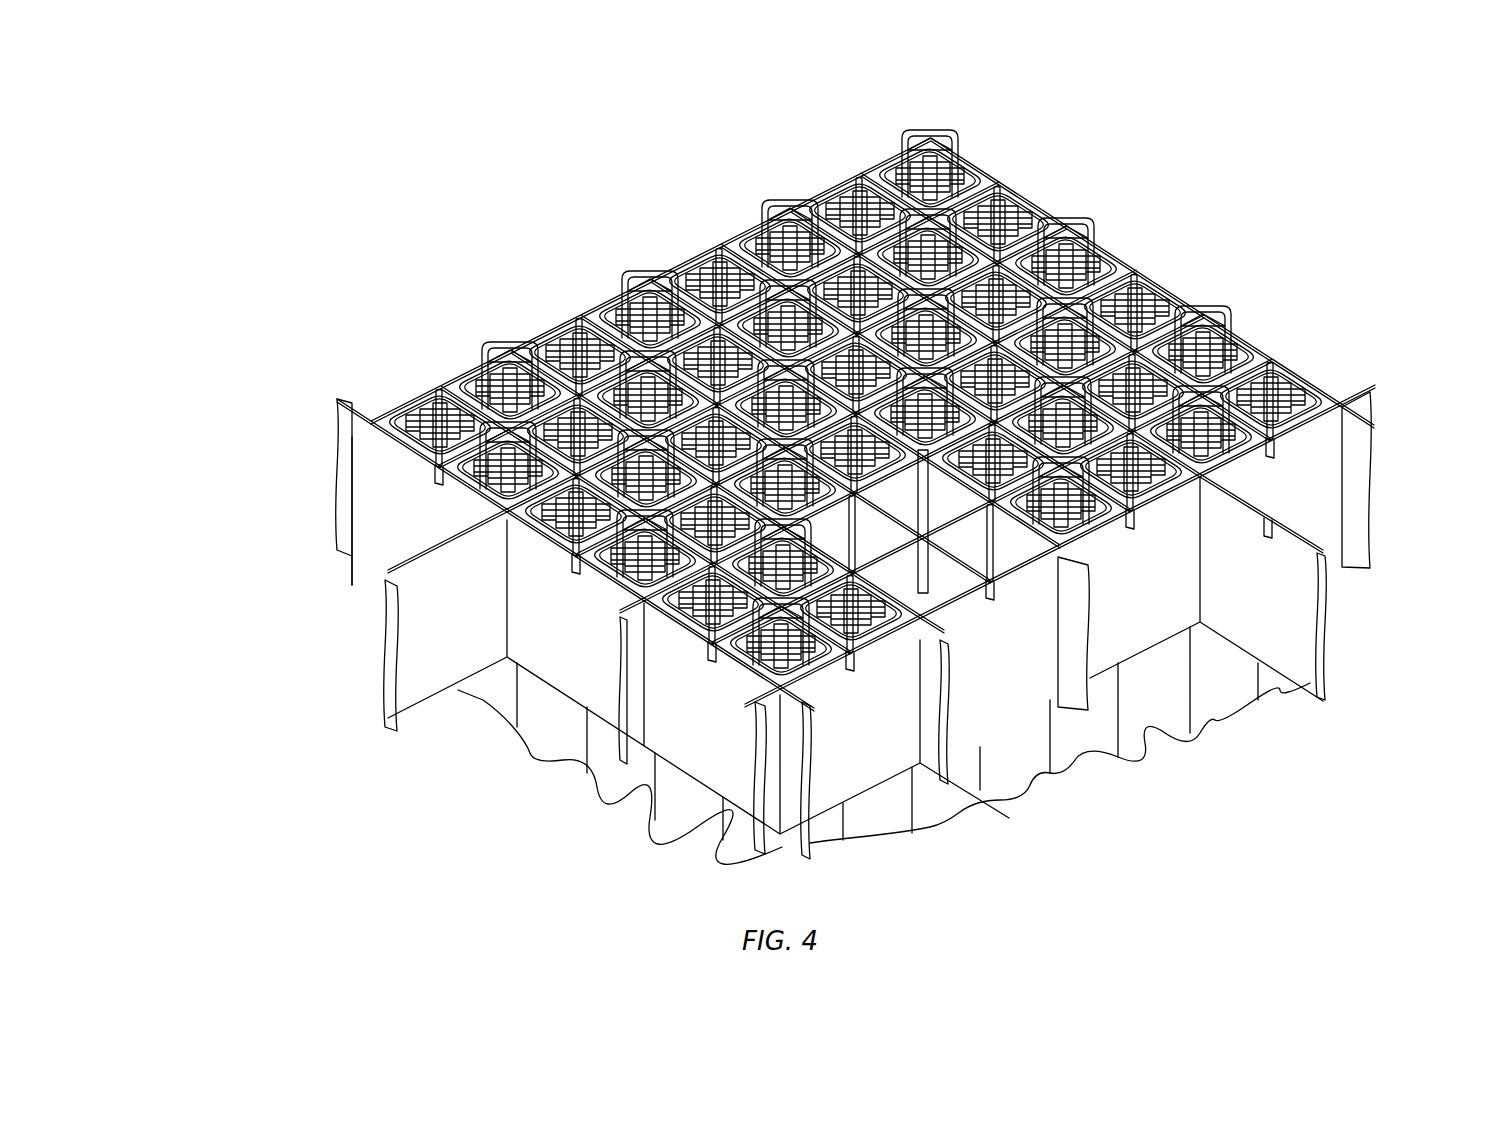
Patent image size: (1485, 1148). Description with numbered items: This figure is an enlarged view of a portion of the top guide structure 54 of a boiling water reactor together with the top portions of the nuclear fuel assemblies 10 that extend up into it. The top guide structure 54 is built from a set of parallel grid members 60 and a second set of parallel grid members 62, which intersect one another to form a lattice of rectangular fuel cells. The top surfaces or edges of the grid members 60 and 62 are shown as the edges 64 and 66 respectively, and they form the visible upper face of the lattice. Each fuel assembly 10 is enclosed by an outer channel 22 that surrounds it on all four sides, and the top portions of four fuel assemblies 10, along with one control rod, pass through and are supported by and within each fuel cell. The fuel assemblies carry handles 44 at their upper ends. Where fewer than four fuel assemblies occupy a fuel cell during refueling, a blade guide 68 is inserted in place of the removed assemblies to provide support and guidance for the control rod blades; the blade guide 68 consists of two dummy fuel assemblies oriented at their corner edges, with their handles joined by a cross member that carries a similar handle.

The nuclear fuel assembly 10 is at (780, 247).
The outer channel 22 is at (558, 520).
The handle 44 is at (515, 346).
The top guide structure 54 is at (797, 446).
The grid members 60 is at (352, 573).
The second set of grid members 62 is at (338, 487).
The top surface of grid members 64 is at (1348, 400).
The top surface of second grid members 66 is at (393, 425).
The blade guide 68 is at (995, 600).